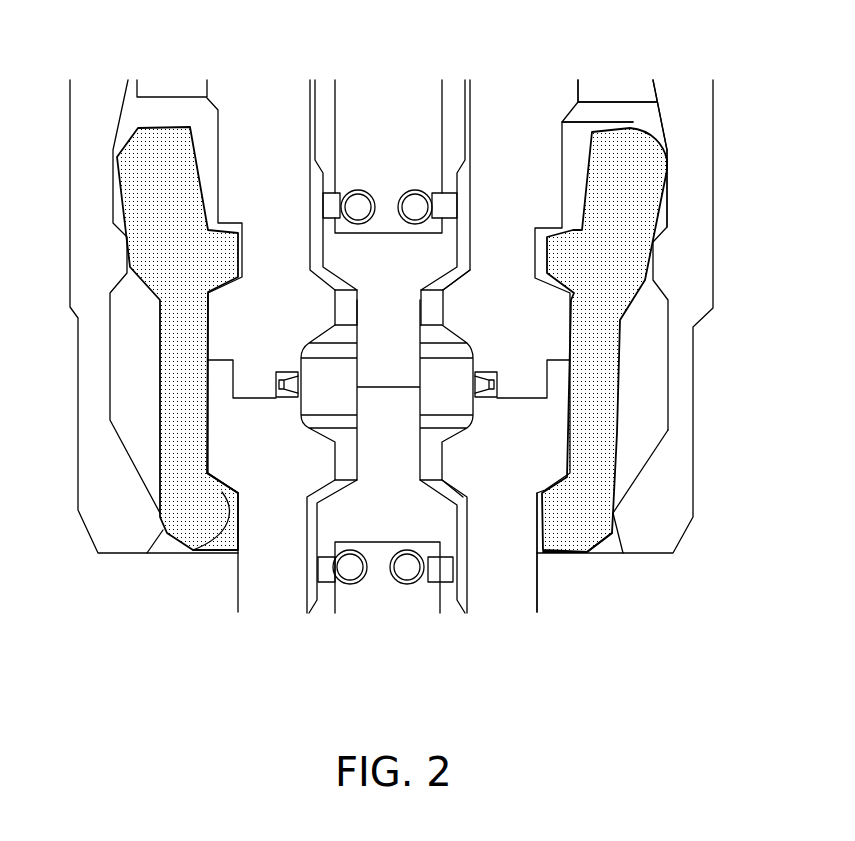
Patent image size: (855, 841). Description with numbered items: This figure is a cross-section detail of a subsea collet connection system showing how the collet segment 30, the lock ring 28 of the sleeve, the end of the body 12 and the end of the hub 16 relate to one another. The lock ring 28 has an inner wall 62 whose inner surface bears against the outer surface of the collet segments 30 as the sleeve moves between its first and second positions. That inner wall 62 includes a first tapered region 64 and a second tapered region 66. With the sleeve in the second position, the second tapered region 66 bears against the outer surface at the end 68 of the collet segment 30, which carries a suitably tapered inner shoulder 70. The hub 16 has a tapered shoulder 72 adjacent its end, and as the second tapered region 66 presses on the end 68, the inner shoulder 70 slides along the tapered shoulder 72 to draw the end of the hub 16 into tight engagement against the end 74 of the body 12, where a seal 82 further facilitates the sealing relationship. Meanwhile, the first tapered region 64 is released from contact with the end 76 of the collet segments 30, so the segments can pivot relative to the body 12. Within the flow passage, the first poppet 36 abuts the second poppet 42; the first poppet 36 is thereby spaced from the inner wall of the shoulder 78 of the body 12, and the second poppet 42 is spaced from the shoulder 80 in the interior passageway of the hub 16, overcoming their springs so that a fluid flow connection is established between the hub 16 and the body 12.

The body 12 is at (530, 100).
The hub 16 is at (498, 600).
The lock ring 28 is at (687, 228).
The collet segment 30 is at (655, 187).
The first poppet 36 is at (401, 272).
The second poppet 42 is at (403, 517).
The inner wall 62 is at (667, 122).
The first tapered region 64 is at (667, 140).
The second tapered region 66 is at (612, 513).
The end of collet segment 68 is at (588, 533).
The inner shoulder 70 is at (195, 550).
The tapered shoulder 72 is at (216, 478).
The end of body 74 is at (520, 396).
The end of collet segments 76 is at (633, 128).
The shoulder of body 78 is at (463, 273).
The shoulder 80 is at (458, 485).
The seal 82 is at (277, 383).